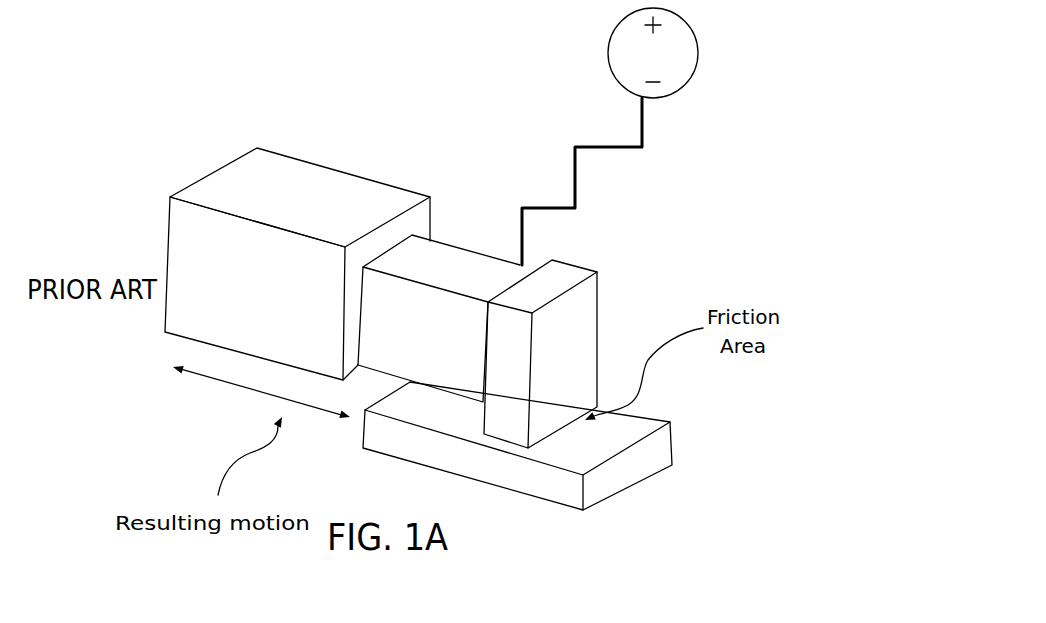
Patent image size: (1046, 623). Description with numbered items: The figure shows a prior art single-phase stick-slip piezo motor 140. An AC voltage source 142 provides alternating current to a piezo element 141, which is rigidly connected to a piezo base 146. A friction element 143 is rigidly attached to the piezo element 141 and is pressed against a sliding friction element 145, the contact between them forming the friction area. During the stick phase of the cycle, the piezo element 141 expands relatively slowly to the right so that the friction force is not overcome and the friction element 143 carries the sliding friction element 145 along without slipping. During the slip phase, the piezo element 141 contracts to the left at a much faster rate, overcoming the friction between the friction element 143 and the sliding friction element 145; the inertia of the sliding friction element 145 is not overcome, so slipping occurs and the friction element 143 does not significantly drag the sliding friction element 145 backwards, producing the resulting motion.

The single-phase stick-slip piezo motor 140 is at (426, 133).
The piezo element 141 is at (453, 256).
The AC voltage source 142 is at (693, 42).
The friction element 143 is at (592, 350).
The sliding friction element 145 is at (640, 479).
The piezo base 146 is at (278, 194).